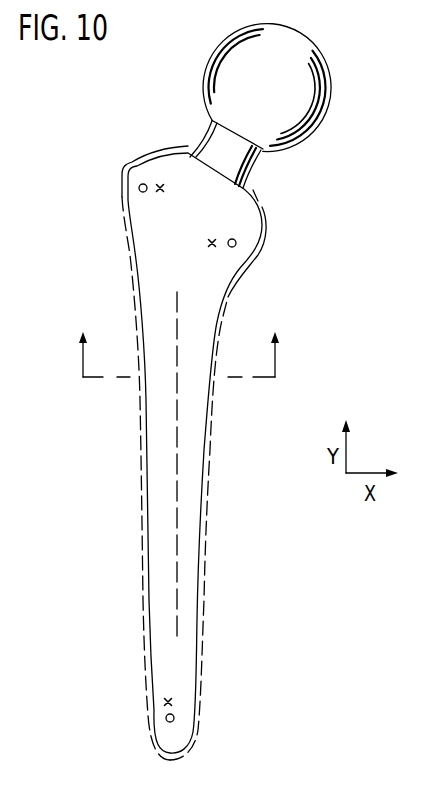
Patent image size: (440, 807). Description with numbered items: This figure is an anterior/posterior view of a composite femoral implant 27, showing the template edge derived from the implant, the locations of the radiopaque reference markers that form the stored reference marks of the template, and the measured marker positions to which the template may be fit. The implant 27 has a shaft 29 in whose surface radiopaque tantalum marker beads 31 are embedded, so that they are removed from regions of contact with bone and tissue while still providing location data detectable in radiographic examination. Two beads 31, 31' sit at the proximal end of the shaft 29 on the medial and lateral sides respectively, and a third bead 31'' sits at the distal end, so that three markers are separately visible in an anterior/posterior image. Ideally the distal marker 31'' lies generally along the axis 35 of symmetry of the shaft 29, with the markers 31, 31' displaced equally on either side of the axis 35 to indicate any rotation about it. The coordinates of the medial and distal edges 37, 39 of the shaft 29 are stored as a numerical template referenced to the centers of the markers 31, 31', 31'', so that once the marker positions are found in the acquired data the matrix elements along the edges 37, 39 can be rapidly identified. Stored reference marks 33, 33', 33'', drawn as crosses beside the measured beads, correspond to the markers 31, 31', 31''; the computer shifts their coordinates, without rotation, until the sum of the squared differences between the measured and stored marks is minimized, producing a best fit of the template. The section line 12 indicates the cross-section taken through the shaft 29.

The section line 12- 12 is at (179, 371).
The implant 27 is at (247, 167).
The shaft 29 is at (202, 302).
The marker bead 31 is at (273, 243).
The marker bead 31' is at (105, 183).
The distal reference marker 31'' is at (125, 727).
The stored reference mark 33 is at (246, 264).
The stored reference mark 33' is at (151, 139).
The stored reference mark 33'' is at (122, 678).
The axis of symmetry 35 is at (177, 425).
The medial edge 37 is at (203, 480).
The distal edge 39 is at (143, 497).